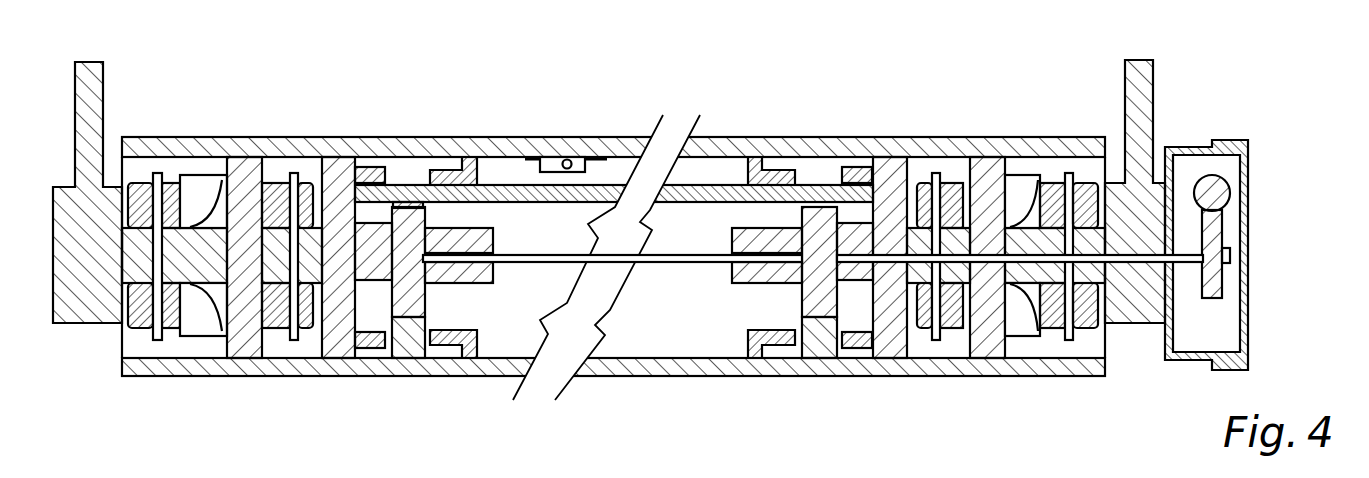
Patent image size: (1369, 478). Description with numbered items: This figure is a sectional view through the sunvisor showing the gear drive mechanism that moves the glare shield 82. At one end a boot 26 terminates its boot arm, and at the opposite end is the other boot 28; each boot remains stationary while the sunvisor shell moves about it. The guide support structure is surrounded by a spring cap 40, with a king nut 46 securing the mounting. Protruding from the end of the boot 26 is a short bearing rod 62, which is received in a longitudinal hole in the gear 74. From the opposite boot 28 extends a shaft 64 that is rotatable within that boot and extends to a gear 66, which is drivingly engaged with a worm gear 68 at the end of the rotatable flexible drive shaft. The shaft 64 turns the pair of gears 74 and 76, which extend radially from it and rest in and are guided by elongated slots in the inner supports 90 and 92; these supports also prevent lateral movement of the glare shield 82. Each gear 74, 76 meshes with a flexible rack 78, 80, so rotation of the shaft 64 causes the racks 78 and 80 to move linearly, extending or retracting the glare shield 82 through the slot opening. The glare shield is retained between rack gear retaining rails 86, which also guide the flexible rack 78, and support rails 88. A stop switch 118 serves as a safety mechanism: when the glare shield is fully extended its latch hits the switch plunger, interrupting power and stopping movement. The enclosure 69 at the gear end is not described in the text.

The boot 26 is at (240, 243).
The boot 28 is at (980, 205).
The spring cap 40 is at (208, 226).
The king nut 46 is at (147, 183).
The bearing rod 62 is at (290, 372).
The shaft 64 is at (667, 260).
The gear 66 is at (1217, 247).
The worm gear 68 is at (1220, 182).
The housing 69 is at (1250, 277).
The gear 74 is at (420, 200).
The gear 76 is at (810, 207).
The rack 78 is at (416, 378).
The rack 80 is at (815, 376).
The glare shield 82 is at (500, 186).
The rack gear retaining rails 86 is at (367, 175).
The support rails 88 is at (385, 178).
The inner support 90 is at (336, 352).
The inner support 92 is at (888, 376).
The stop switch 118 is at (582, 160).